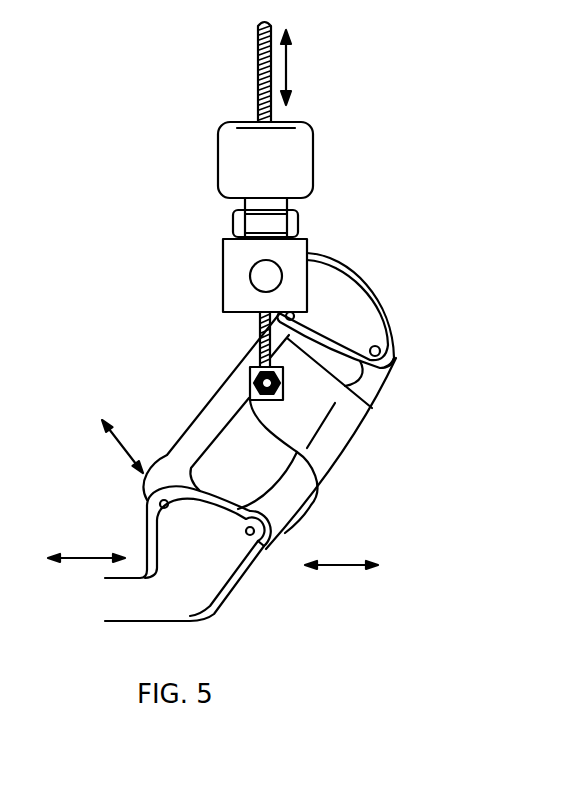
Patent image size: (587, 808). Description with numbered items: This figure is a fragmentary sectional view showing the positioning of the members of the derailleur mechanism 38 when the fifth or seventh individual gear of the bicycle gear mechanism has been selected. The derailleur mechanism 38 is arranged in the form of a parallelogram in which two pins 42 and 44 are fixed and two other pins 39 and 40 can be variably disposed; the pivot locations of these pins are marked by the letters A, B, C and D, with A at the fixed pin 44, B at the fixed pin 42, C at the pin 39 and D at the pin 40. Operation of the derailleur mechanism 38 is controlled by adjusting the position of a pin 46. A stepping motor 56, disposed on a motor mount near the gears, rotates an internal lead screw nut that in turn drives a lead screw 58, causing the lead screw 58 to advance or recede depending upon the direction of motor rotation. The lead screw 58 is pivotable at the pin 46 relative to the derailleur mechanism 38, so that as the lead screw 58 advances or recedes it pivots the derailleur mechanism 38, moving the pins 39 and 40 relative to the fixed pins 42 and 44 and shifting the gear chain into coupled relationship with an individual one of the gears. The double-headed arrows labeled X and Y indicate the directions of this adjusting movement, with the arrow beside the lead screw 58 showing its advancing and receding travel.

The derailleur mechanism 38 is at (390, 431).
The pin 39 is at (381, 346).
The pin 40 is at (335, 310).
The pin 42 is at (254, 540).
The pin 44 is at (175, 549).
The pin 46 is at (250, 388).
The stepping motor 56 is at (300, 152).
The lead screw 58 is at (257, 50).
The pivot point A is at (150, 512).
The pivot point B is at (270, 552).
The pivot point C is at (390, 361).
The pivot point D is at (294, 320).
The X direction arrow X is at (338, 572).
The Y direction arrow Y is at (120, 452).